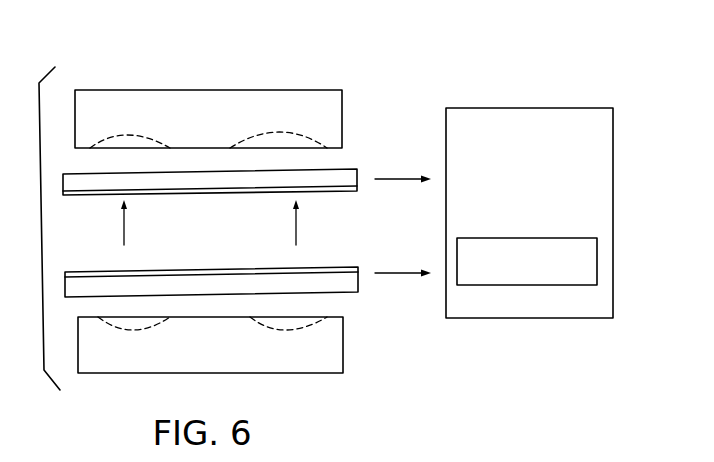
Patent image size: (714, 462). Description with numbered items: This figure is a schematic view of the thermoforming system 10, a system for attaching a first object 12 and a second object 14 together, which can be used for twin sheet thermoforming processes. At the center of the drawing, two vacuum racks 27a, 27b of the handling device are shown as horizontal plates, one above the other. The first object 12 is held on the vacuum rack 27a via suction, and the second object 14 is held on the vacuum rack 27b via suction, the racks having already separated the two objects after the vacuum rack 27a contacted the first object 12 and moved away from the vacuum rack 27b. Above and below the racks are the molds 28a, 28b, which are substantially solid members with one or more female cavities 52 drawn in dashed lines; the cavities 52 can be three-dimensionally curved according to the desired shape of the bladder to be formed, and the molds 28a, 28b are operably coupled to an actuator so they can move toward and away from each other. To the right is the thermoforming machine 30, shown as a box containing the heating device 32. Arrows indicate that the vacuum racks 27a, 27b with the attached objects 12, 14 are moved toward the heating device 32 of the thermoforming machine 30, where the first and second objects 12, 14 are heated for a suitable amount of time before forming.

The thermoforming system 10 is at (444, 71).
The first object 12 is at (330, 192).
The second object 14 is at (333, 267).
The vacuum rack 27a is at (237, 183).
The vacuum rack 27b is at (251, 277).
The mold 28a is at (318, 110).
The mold 28b is at (336, 347).
The thermoforming machine 30 is at (607, 145).
The heating device 32 is at (590, 257).
The female cavities 52 is at (108, 138).